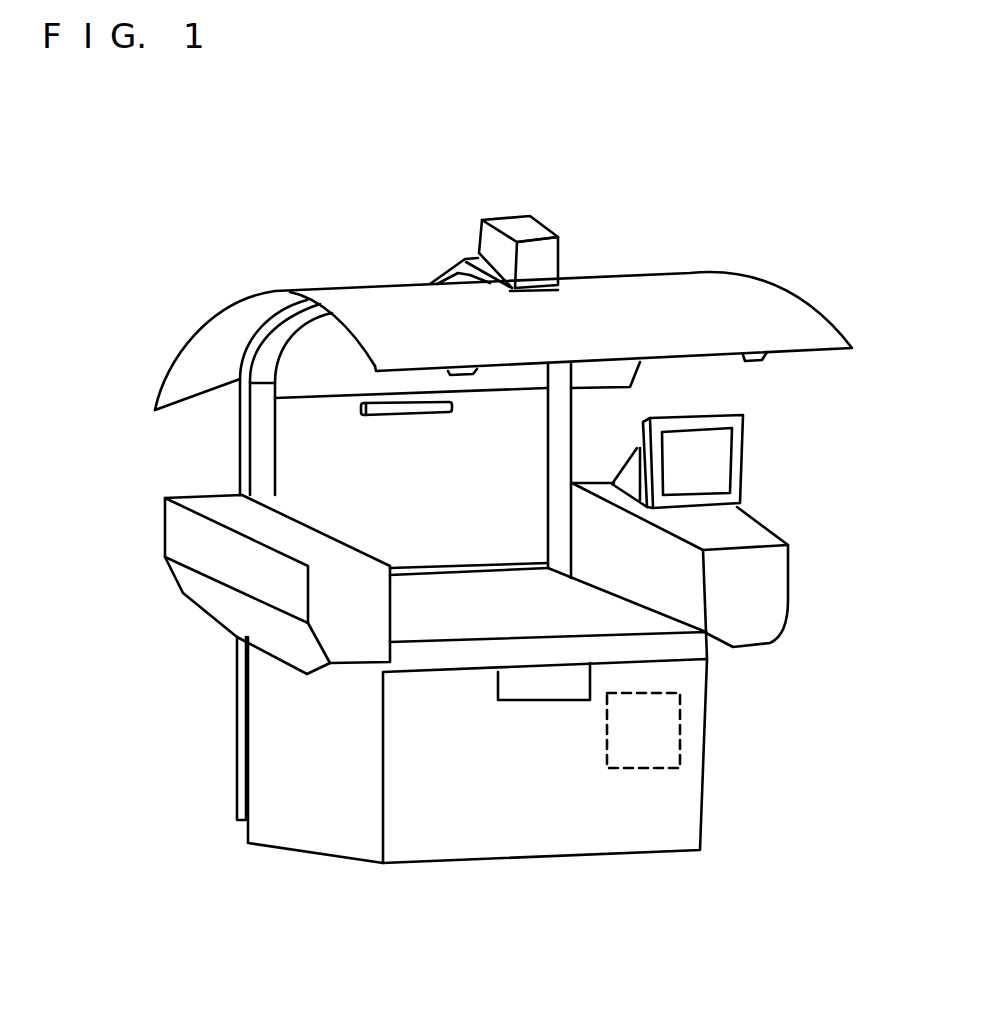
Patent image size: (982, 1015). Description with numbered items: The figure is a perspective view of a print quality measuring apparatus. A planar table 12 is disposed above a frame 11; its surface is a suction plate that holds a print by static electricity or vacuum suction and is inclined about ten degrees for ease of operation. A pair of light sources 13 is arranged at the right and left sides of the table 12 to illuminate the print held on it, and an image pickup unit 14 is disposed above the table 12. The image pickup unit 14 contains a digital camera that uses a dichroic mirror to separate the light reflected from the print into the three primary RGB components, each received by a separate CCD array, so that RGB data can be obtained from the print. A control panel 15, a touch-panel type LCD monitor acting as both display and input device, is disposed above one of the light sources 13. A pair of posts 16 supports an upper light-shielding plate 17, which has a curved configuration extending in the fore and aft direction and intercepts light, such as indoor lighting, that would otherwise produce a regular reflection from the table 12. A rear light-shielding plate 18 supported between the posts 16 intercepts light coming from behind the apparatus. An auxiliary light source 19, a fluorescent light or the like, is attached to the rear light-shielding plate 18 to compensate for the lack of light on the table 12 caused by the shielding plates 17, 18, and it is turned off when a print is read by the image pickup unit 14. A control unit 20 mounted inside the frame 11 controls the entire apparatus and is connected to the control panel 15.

The frame 11 is at (675, 807).
The table 12 is at (498, 623).
The light sources 13 is at (260, 578).
The image pickup unit 14 is at (545, 258).
The control panel 15 is at (717, 462).
The posts 16 is at (260, 437).
The upper light-shielding plate 17 is at (690, 290).
The rear light-shielding plate 18 is at (308, 478).
The auxiliary light source 19 is at (423, 408).
The control unit 20 is at (660, 732).